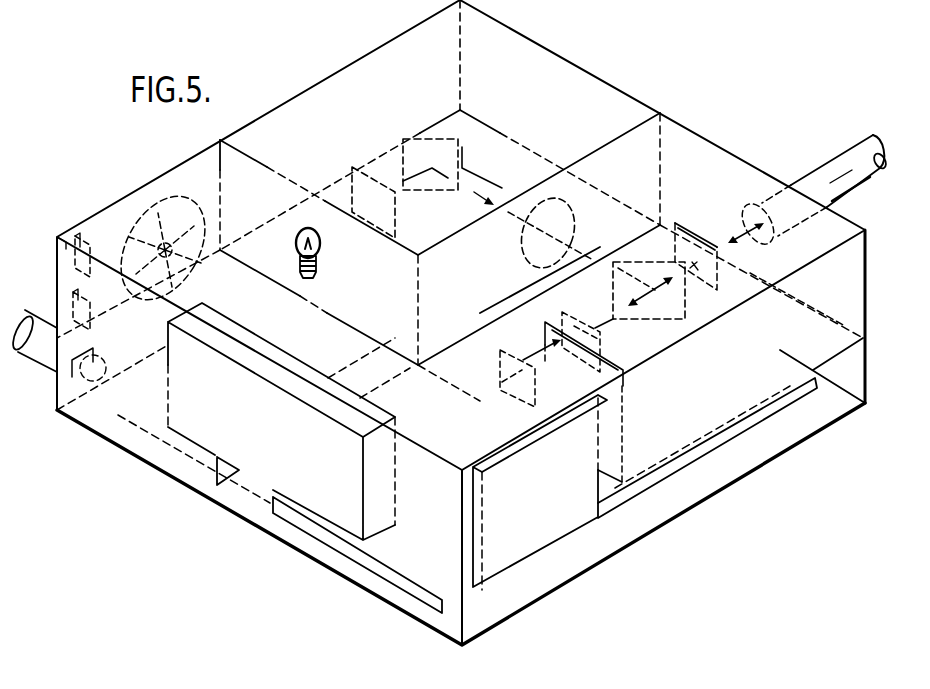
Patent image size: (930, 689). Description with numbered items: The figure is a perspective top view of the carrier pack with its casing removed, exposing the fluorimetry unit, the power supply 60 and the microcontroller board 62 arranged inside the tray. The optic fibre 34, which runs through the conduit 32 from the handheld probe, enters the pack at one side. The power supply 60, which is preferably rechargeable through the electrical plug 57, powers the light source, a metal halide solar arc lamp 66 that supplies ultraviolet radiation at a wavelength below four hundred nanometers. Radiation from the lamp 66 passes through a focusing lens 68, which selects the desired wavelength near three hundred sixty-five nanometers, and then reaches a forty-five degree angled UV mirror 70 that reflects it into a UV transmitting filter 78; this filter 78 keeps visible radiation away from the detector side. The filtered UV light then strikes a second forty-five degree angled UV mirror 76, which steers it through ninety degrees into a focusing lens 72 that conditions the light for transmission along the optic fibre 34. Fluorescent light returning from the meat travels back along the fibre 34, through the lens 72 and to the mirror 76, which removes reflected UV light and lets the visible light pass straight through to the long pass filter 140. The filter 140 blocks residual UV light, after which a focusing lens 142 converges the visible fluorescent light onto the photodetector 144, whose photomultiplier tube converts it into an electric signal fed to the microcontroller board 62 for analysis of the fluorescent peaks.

The conduit 32 is at (805, 170).
The optic fibre 34 is at (847, 184).
The electrical plug 57 is at (58, 236).
The power supply 60 is at (116, 415).
The microcontroller board 62 is at (372, 562).
The lamp 66 is at (297, 231).
The focusing lens 68 is at (353, 165).
The angled UV mirror 70 is at (462, 147).
The focusing lens 72 is at (676, 233).
The angled UV mirror 76 is at (654, 262).
The UV transmitting filter 78 is at (560, 223).
The long pass filter 140 is at (600, 345).
The focusing lens 142 is at (570, 357).
The photodetector 144 is at (520, 393).